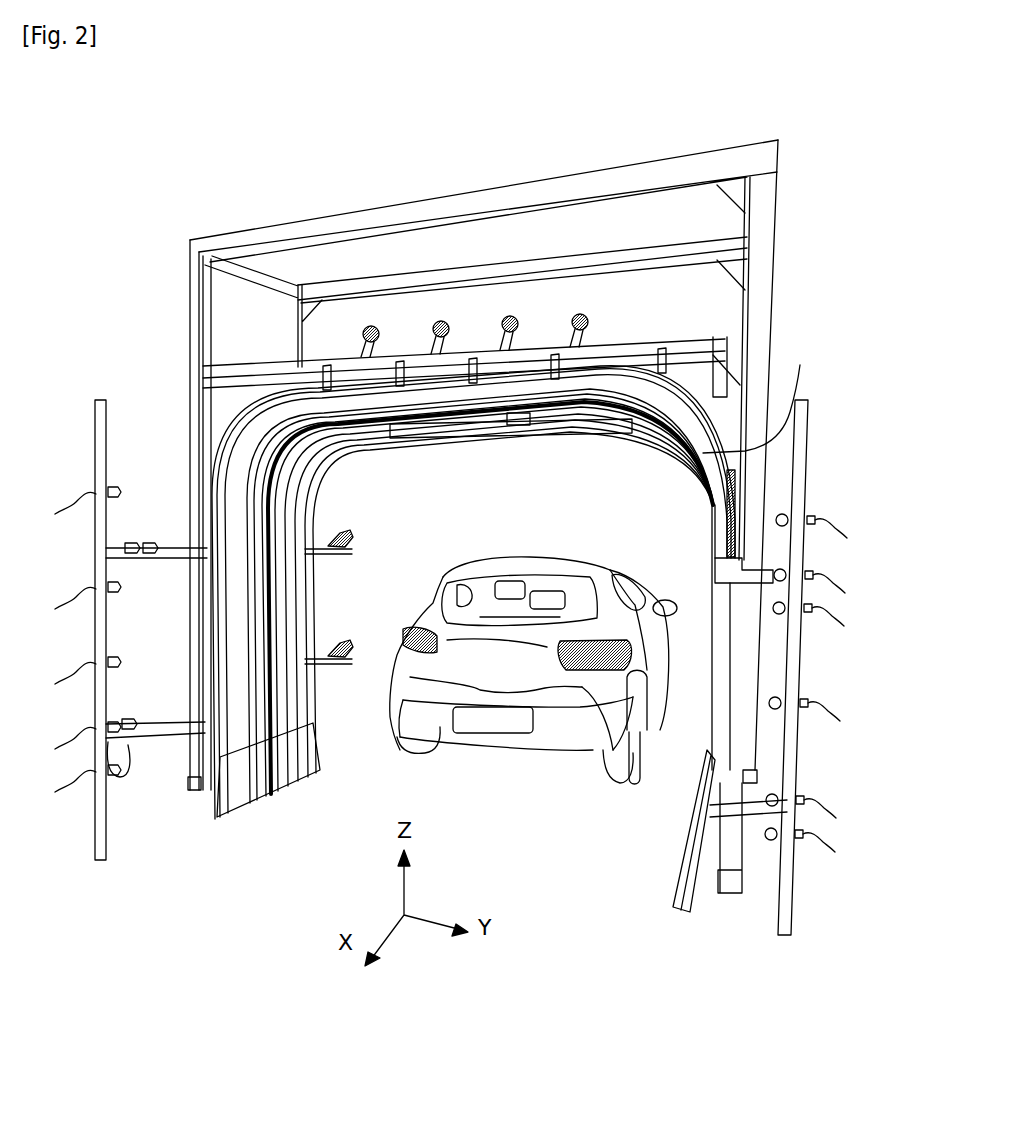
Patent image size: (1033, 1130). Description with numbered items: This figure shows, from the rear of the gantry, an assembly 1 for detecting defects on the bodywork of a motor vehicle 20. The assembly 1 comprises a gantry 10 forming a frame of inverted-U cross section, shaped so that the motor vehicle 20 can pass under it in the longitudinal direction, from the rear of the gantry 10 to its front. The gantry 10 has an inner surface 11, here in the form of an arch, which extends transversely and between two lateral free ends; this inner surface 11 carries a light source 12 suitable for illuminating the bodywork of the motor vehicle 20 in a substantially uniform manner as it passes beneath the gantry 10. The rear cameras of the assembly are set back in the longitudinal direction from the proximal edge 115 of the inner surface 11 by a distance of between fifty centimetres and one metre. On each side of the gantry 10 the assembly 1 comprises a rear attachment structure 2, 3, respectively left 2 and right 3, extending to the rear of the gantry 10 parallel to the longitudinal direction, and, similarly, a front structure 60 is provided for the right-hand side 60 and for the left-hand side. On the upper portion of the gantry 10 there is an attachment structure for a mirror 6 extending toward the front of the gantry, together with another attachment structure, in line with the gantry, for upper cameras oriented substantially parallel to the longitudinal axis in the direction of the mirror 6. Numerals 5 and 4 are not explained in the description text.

The assembly 1 is at (205, 203).
The lighting rail 5 is at (624, 352).
The proximal edge 115 is at (705, 452).
The gantry 10 is at (265, 440).
The light source 12 is at (267, 560).
The mirror 6 is at (557, 440).
The nozzle 4 is at (328, 640).
The left rear attachment structure 2 is at (123, 562).
The right rear attachment structure 3 is at (758, 572).
The front structure 60 is at (125, 776).
The inner surface 11 is at (247, 782).
The motor vehicle 20 is at (617, 775).